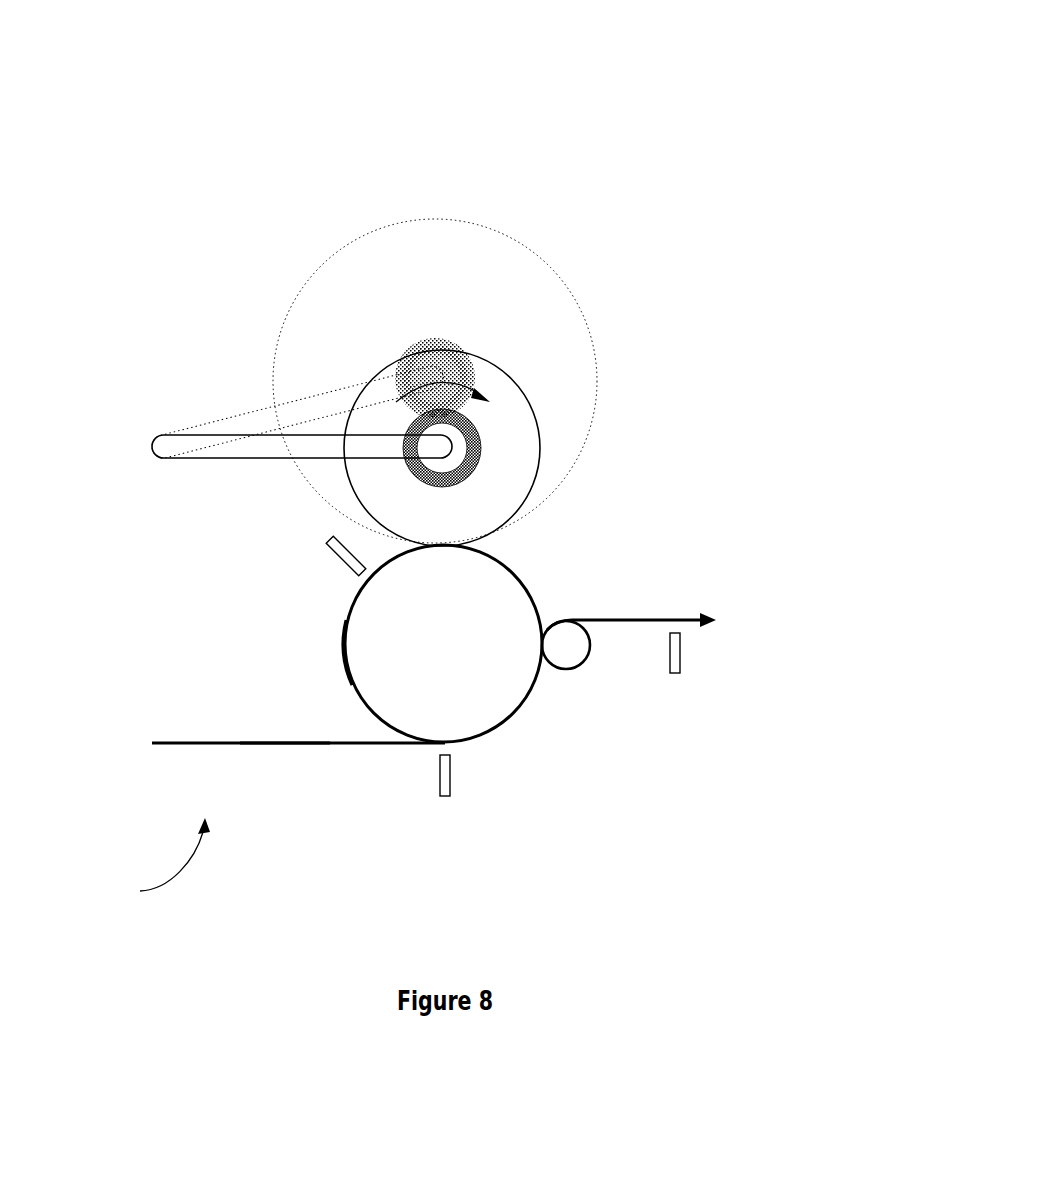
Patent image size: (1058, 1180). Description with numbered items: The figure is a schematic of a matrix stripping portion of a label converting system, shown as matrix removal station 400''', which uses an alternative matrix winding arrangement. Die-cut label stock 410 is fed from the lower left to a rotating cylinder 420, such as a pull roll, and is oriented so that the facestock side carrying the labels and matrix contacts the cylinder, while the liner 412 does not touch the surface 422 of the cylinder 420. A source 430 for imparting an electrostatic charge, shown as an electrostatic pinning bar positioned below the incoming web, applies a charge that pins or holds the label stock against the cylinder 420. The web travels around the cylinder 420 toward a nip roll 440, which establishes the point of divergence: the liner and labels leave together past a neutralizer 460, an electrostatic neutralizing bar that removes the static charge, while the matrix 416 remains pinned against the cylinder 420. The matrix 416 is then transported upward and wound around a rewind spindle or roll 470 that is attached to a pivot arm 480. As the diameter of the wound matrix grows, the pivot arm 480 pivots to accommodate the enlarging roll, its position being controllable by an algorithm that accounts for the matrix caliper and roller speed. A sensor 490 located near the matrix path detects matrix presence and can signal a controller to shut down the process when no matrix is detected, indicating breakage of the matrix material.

The matrix removal station 400''' is at (445, 455).
The matrix 416 is at (303, 292).
The rewind spindle or roll 470 is at (483, 455).
The pivot arm 480 is at (173, 435).
The sensor 490 is at (333, 540).
The rotating cylinder 420 is at (360, 615).
The surface of cylinder 422 is at (358, 690).
The liner 412 is at (270, 745).
The die-cut label stock 410 is at (158, 860).
The source for imparting an electrostatic charge 430 is at (444, 797).
The nip roll 440 is at (590, 640).
The neutralizer 460 is at (675, 673).